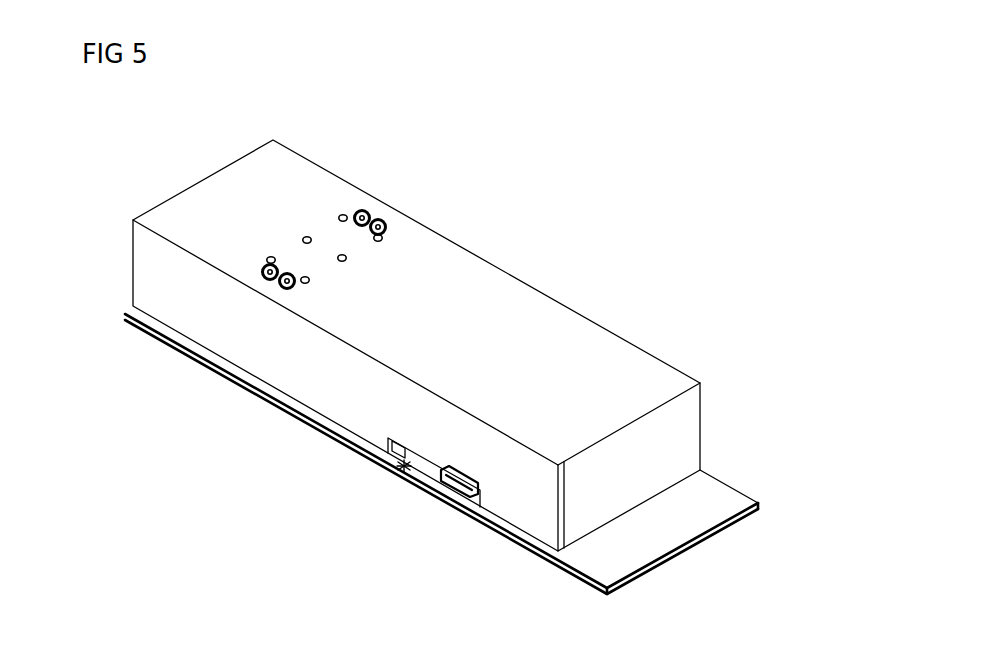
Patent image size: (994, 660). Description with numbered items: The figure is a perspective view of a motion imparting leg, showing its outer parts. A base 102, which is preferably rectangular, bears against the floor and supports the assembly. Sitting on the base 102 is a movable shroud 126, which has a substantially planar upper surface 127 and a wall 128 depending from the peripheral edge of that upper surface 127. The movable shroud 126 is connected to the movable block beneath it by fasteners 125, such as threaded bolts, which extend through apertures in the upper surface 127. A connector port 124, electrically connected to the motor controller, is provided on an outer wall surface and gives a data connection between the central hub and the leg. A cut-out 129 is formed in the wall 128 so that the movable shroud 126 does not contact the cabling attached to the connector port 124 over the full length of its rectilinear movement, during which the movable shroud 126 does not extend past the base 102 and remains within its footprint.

The base 102 is at (683, 547).
The connector port 124 is at (446, 495).
The fasteners 125 is at (368, 211).
The movable shroud 126 is at (488, 258).
The upper surface 127 is at (537, 383).
The wall 128 is at (213, 322).
The cut-out 129 is at (400, 465).